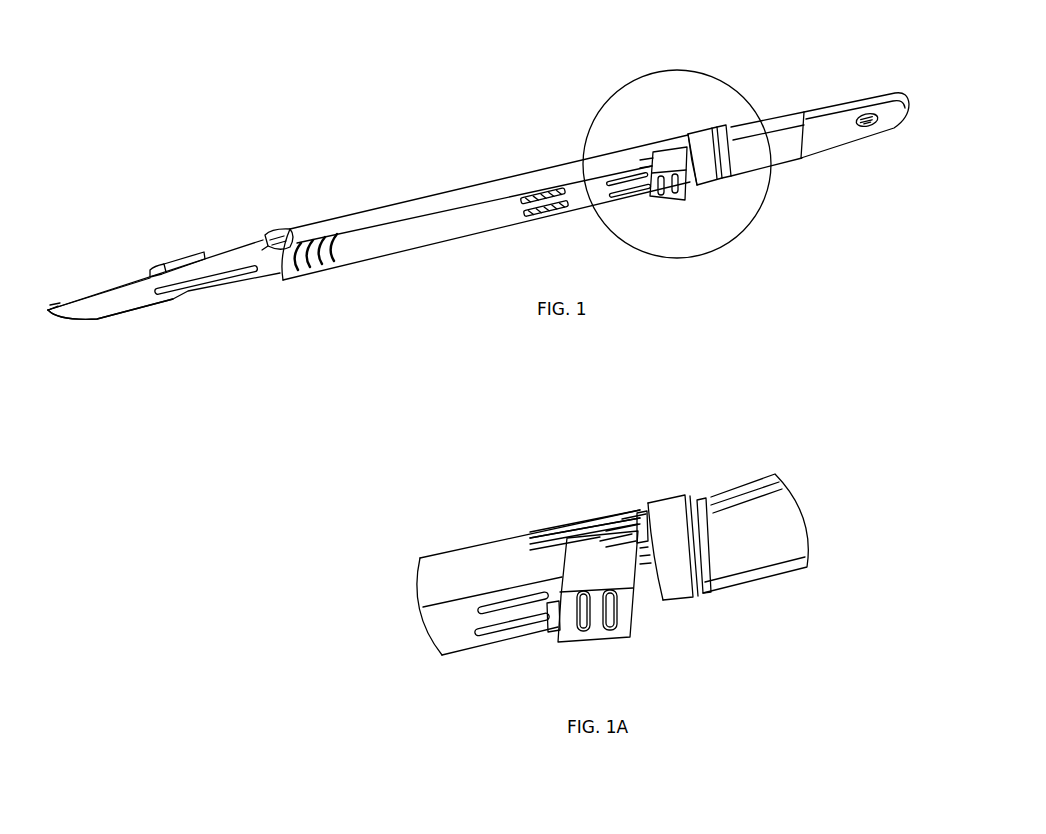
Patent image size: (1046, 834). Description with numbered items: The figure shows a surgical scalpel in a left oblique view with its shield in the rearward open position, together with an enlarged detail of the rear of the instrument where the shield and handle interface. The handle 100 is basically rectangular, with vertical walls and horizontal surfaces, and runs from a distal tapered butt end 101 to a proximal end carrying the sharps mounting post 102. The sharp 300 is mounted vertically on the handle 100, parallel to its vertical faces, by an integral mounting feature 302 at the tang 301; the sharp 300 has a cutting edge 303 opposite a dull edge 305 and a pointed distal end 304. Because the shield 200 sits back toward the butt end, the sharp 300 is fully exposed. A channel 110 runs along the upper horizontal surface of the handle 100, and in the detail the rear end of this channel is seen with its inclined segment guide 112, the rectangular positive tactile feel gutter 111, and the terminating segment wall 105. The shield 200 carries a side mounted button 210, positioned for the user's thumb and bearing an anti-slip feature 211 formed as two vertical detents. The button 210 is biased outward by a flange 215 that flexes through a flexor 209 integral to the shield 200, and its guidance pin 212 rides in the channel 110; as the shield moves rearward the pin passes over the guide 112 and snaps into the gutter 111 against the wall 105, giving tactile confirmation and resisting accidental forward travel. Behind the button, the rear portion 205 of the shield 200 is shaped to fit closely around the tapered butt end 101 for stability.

In FIG. 1, the handle 100 is at (783, 150).
In FIG. 1, the distal tapered butt end 101 is at (832, 134).
In FIG. 1, the sharps mounting post 102 is at (175, 264).
In FIG. 1A, the terminating segment wall 105 is at (641, 528).
In FIG. 1A, the channel 110 is at (547, 541).
In FIG. 1A, the positive tactile feel gutter 111 is at (628, 531).
In FIG. 1A, the inclined segment guide 112 is at (619, 538).
In FIG. 1, the shield 200 is at (405, 211).
In FIG. 1A, the shield 200 is at (451, 571).
In FIG. 1A, the rear portion 205 is at (601, 578).
In FIG. 1A, the flexor 209 is at (497, 616).
In FIG. 1A, the button 210 is at (678, 576).
In FIG. 1A, the anti-slip feature 211 is at (614, 623).
In FIG. 1A, the guidance pin 212 is at (633, 522).
In FIG. 1A, the flange 215 is at (549, 606).
In FIG. 1, the sharp 300 is at (116, 306).
In FIG. 1, the tang 301 is at (279, 276).
In FIG. 1, the integral mounting feature 302 is at (206, 275).
In FIG. 1, the cutting edge 303 is at (97, 322).
In FIG. 1, the pointed distal end 304 is at (53, 303).
In FIG. 1, the dull edge 305 is at (104, 289).